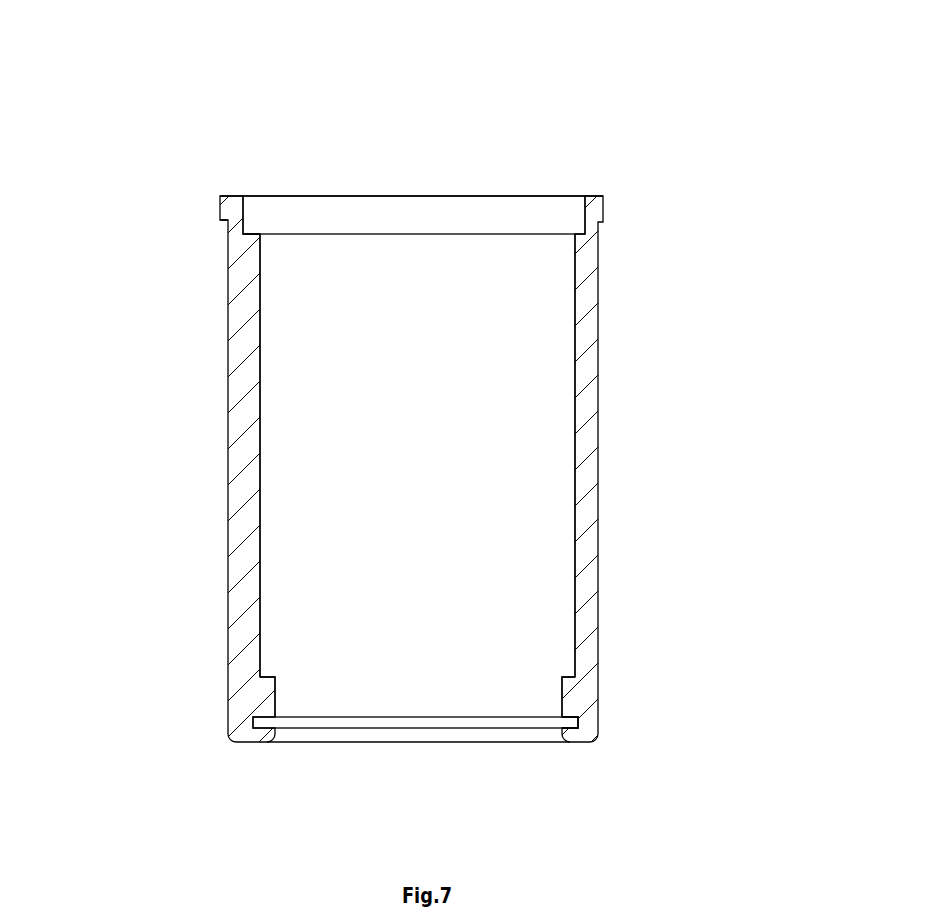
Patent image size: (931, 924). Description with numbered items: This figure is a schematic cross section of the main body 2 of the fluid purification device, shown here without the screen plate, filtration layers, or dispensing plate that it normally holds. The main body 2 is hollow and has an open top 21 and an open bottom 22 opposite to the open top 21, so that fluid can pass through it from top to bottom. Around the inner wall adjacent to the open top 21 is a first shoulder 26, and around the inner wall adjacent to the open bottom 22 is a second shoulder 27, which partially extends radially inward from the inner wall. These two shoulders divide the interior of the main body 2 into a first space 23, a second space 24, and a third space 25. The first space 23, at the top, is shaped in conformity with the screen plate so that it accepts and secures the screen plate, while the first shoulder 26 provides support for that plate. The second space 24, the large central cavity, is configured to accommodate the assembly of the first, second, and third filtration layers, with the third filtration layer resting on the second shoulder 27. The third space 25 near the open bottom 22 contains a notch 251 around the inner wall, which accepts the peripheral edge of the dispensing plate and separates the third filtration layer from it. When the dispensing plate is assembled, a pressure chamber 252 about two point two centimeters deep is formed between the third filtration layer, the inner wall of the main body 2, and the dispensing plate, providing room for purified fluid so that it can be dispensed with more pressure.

The main body 2 is at (582, 447).
The open top 21 is at (411, 139).
The open bottom 22 is at (463, 743).
The first space 23 is at (316, 220).
The second space 24 is at (355, 442).
The third space 25 is at (661, 672).
The notch 251 is at (577, 721).
The pressure chamber 252 is at (495, 702).
The first shoulder 26 is at (242, 231).
The second shoulder 27 is at (267, 677).